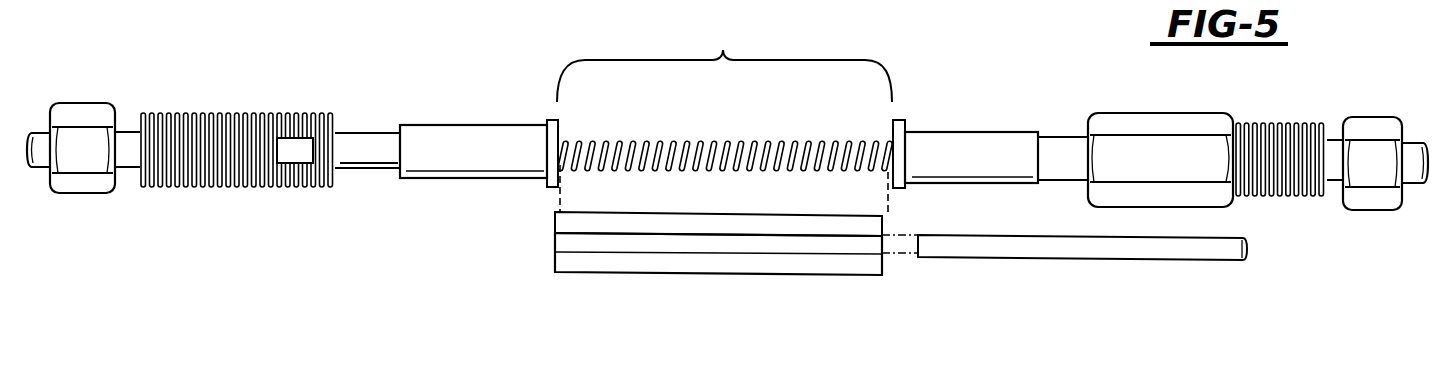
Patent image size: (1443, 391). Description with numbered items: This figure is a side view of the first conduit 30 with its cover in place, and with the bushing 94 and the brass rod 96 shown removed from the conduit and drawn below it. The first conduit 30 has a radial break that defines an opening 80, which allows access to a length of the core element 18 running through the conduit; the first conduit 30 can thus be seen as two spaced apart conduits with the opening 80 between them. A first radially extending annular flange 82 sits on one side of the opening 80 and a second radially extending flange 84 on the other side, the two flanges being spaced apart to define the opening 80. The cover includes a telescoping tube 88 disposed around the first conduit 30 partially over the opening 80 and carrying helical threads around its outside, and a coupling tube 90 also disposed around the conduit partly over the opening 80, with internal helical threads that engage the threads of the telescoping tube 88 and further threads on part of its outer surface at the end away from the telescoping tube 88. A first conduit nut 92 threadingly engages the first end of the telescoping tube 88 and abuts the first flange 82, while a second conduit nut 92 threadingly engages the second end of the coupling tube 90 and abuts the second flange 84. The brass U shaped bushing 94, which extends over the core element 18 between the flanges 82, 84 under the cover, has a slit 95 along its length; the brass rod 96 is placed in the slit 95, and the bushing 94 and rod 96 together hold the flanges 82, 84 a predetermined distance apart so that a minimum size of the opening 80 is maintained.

The core element 18 is at (750, 141).
The first conduit 30 is at (38, 167).
The opening 80 is at (724, 61).
The first radially extending annular flange 82 is at (552, 120).
The second radially extending flange 84 is at (900, 120).
The telescoping tube 88 is at (248, 112).
The coupling tube 90 is at (1173, 112).
The conduit nut 92 is at (90, 112).
The U shaped bushing 94 is at (650, 274).
The slit 95 is at (555, 238).
The brass rod 96 is at (1008, 253).